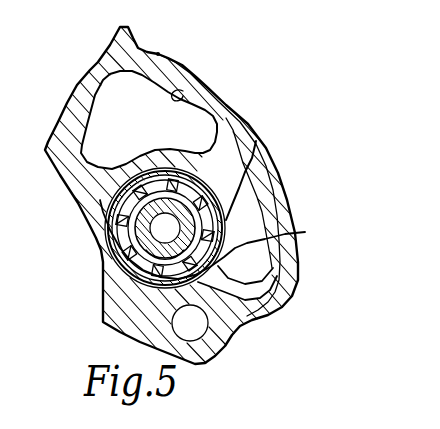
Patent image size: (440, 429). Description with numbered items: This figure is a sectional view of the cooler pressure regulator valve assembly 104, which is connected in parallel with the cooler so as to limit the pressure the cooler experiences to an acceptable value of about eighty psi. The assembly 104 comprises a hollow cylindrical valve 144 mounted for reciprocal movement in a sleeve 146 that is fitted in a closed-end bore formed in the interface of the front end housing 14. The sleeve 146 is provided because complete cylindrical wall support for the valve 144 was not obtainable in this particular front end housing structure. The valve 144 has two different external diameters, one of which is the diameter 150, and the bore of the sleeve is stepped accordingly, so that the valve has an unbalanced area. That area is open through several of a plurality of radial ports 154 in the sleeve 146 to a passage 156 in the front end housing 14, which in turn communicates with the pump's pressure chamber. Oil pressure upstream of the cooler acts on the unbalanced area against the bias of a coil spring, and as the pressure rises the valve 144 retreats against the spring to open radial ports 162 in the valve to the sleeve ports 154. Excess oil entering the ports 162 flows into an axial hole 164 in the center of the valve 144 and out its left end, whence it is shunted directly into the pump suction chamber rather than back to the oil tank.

The front end housing 14 is at (158, 54).
The cooler pressure regulator valve assembly 104 is at (109, 207).
The hollow cylindrical valve 144 is at (206, 221).
The sleeve 146 is at (223, 239).
The external diameter 150 is at (198, 283).
The radial ports 154 is at (193, 173).
The passage 156 is at (178, 95).
The radial ports 162 is at (118, 232).
The axial hole 164 is at (143, 271).